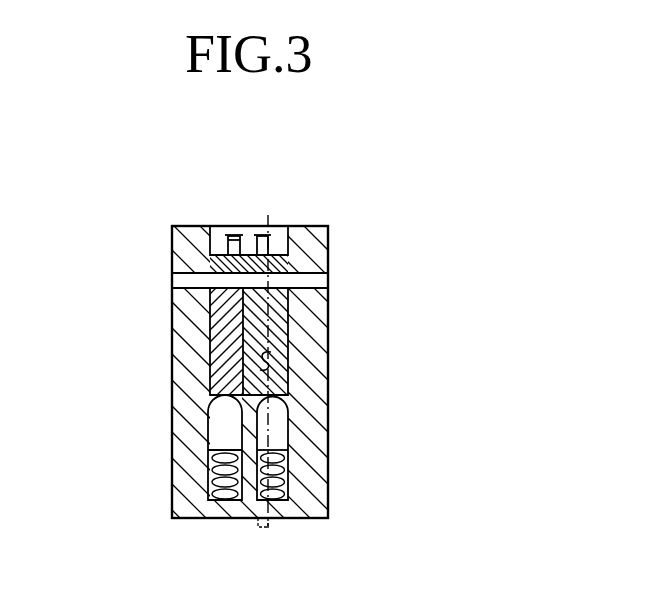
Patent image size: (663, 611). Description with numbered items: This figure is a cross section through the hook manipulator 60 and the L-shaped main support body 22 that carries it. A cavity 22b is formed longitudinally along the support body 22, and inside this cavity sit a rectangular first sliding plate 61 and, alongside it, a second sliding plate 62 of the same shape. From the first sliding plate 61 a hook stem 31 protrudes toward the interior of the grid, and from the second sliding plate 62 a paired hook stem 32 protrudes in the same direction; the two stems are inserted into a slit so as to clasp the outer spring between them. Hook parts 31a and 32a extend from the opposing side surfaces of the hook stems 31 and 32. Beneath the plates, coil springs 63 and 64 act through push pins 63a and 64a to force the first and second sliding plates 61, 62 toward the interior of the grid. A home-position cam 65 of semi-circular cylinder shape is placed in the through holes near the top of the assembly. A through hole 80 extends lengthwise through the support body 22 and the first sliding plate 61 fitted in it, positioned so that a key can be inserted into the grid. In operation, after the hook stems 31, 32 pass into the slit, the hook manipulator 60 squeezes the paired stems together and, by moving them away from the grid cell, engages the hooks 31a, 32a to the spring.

The hook manipulator 60 is at (419, 387).
The main support body 22 is at (318, 450).
The cavity 22b is at (218, 318).
The hook stem 31 is at (327, 244).
The hook part 31a is at (270, 228).
The hook stem 32 is at (218, 228).
The hook part 32a is at (232, 228).
The home-position cam 65 is at (322, 282).
The first sliding plate 61 is at (275, 323).
The second sliding plate 62 is at (232, 352).
The through hole 80 is at (270, 355).
The coil spring 63 is at (290, 488).
The push pin 63a is at (278, 430).
The coil spring 64 is at (215, 476).
The push pin 64a is at (222, 430).